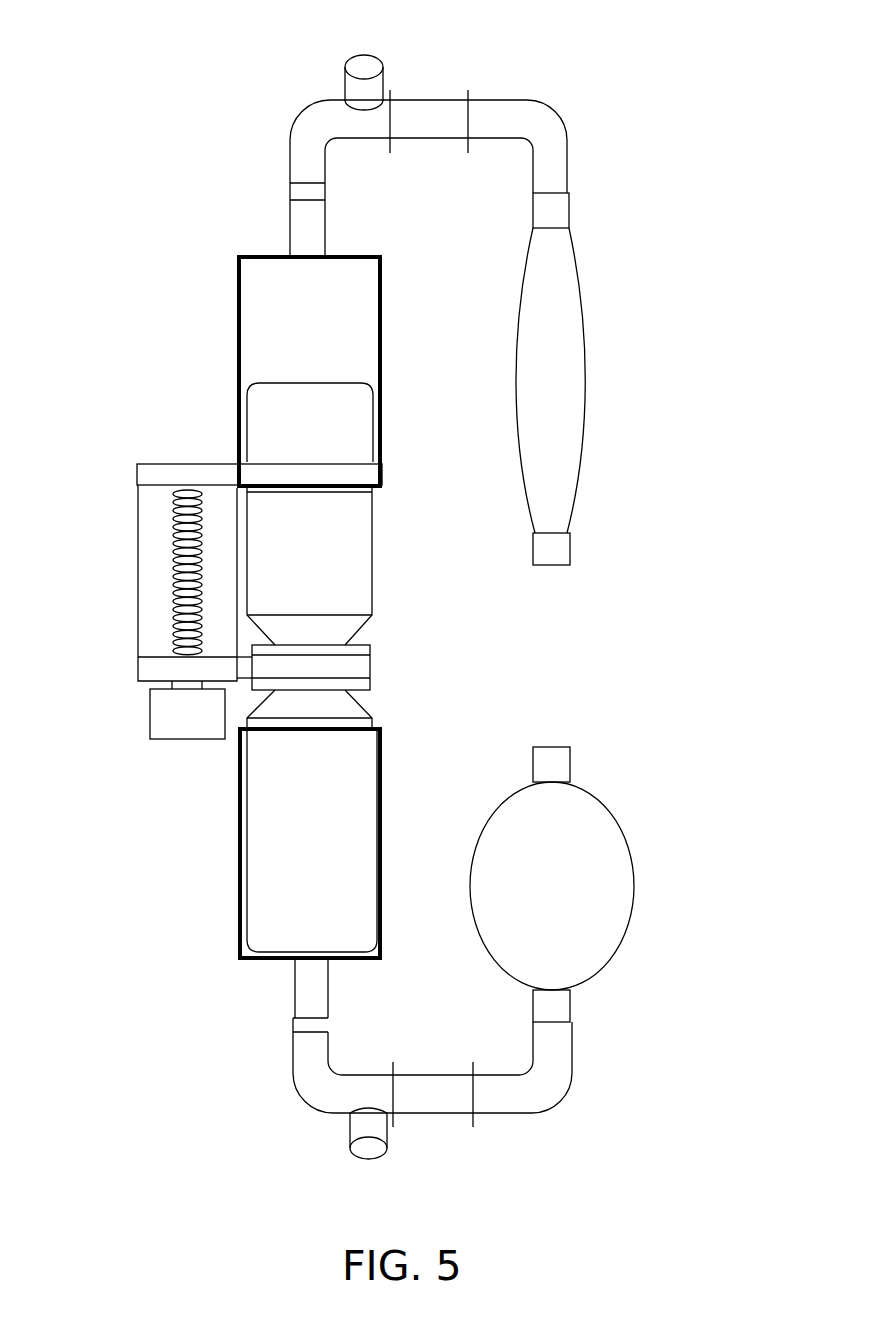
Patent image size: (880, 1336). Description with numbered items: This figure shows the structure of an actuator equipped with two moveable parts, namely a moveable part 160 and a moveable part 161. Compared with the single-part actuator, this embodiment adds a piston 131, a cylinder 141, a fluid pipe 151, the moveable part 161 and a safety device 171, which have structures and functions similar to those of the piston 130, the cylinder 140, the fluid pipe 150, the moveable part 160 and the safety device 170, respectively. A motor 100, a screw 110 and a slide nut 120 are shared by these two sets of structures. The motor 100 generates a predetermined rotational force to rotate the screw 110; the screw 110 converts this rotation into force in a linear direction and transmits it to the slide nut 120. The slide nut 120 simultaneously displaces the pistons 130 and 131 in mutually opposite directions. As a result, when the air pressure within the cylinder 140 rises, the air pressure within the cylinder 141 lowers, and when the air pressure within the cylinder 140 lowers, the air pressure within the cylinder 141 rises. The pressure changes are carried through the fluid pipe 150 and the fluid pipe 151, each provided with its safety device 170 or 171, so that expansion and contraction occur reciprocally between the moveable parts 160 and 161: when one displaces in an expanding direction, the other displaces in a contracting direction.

The motor 100 is at (185, 740).
The screw 110 is at (172, 523).
The slide nut 120 is at (373, 662).
The piston 130 is at (377, 598).
The piston 131 is at (372, 706).
The cylinder 140 is at (237, 285).
The cylinder 141 is at (238, 930).
The fluid pipe 150 is at (490, 100).
The fluid pipe 151 is at (485, 1113).
The moveable part 160 is at (580, 360).
The moveable part 161 is at (636, 892).
The safety device 170 is at (345, 75).
The safety device 171 is at (347, 1150).